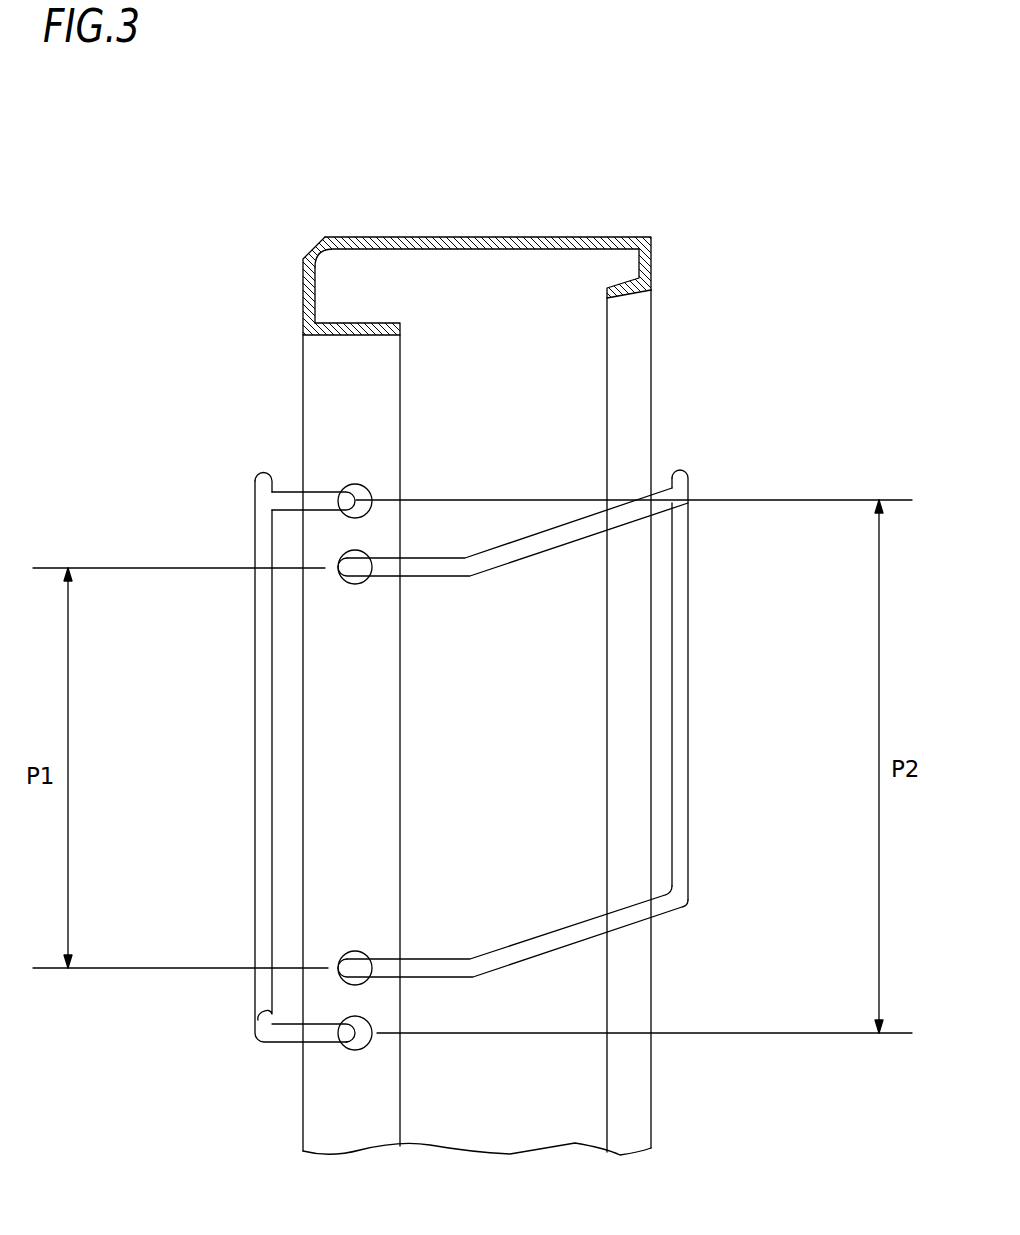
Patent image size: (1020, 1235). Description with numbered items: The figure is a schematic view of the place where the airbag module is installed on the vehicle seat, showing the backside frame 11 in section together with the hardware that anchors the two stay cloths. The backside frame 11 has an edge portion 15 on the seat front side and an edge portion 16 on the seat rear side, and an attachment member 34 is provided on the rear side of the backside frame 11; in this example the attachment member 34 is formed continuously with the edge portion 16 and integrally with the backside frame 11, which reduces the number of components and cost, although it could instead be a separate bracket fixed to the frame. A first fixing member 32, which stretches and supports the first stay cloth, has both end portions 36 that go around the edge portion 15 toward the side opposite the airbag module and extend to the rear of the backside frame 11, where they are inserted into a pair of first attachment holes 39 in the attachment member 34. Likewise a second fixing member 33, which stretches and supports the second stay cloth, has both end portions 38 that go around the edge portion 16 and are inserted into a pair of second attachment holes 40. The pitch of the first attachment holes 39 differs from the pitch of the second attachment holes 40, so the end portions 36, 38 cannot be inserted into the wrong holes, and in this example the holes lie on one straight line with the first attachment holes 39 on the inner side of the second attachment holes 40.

The backside frame 11 is at (636, 236).
The edge portion on the seat front side 15 is at (652, 258).
The edge portion on the seat rear side 16 is at (303, 295).
The attachment member 34 is at (360, 323).
The second fixing member 33 is at (255, 737).
The first fixing member 32 is at (688, 643).
The end portions of the first fixing member 36 is at (386, 572).
The end portions of the second fixing member 38 is at (320, 500).
The first attachment holes 39 is at (340, 582).
The second attachment holes 40 is at (372, 490).